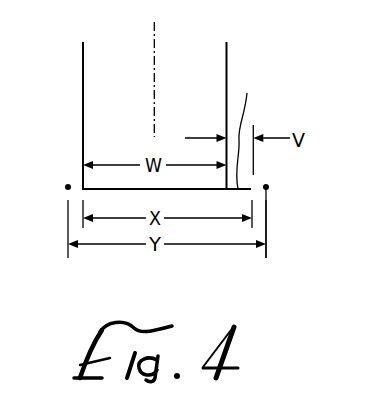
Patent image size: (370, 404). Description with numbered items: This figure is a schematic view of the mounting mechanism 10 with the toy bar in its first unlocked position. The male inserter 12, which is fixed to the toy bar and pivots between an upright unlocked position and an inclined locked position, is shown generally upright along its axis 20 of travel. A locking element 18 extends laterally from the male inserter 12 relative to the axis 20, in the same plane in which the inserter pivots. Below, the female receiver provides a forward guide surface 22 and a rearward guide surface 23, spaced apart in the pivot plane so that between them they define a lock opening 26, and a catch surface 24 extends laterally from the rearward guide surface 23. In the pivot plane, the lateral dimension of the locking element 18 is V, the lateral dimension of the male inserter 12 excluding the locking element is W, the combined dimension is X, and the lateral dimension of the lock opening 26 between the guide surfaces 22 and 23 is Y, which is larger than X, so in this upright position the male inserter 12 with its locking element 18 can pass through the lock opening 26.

The mounting mechanism 10 is at (296, 74).
The male inserter 12 is at (76, 115).
The locking element 18 is at (247, 130).
The axis 20 is at (155, 77).
The forward guide surface 22 is at (68, 184).
The rearward guide surface 23 is at (266, 184).
The catch surface 24 is at (268, 190).
The lock opening 26 is at (128, 202).